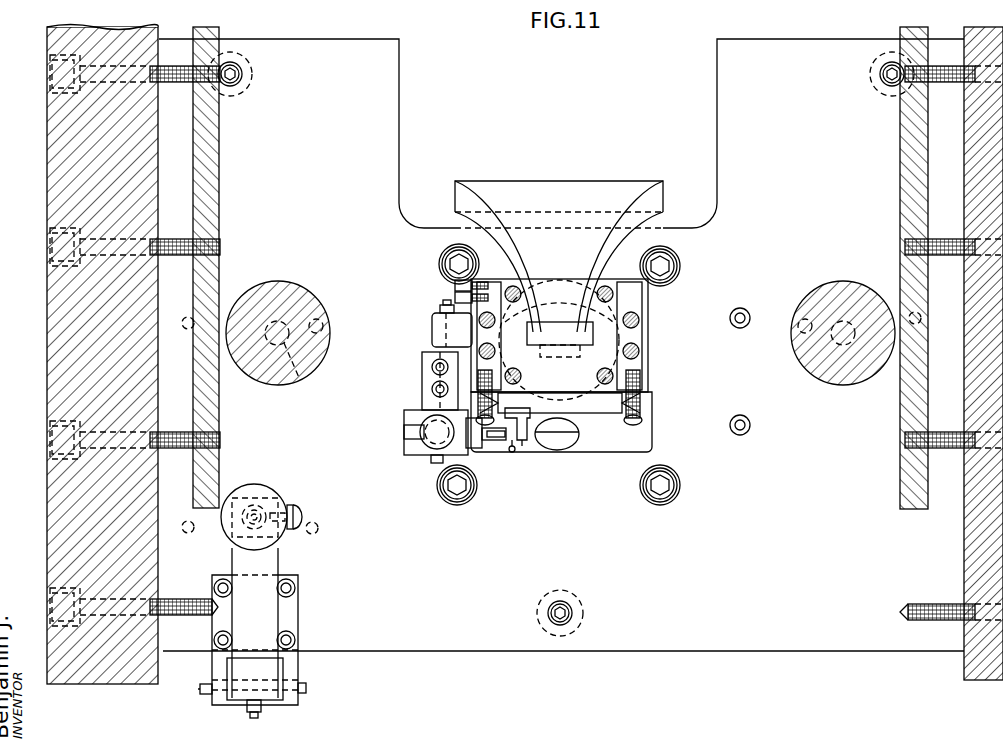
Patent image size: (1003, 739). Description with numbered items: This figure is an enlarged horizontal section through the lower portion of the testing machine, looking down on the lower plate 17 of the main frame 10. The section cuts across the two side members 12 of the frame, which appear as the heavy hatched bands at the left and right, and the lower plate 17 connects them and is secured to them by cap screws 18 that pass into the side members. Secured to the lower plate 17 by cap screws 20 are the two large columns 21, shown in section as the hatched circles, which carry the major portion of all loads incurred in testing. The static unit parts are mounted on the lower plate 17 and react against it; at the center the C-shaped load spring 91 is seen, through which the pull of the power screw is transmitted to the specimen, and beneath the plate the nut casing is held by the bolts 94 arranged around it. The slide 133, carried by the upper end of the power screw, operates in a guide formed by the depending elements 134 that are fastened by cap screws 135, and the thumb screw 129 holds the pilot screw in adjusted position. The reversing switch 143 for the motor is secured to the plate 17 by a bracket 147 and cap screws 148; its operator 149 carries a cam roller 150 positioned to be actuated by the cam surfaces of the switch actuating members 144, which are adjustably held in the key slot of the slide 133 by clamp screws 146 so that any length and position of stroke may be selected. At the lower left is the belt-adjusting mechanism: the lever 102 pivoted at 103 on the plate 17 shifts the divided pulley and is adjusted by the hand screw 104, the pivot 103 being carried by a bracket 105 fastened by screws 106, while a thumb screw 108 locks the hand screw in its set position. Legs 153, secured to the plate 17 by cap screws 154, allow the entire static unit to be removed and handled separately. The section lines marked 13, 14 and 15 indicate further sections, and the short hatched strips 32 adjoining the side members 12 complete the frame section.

The main frame 10 is at (46, 340).
The side members 12 is at (47, 386).
The section line 13 is at (700, 349).
The section line 14 is at (392, 470).
The top plate 15 is at (633, 240).
The lower plate 17 is at (416, 651).
The cap screws 18 is at (178, 620).
The cap screws 20 is at (300, 382).
The columns 21 is at (258, 384).
The guide strip 32 is at (200, 512).
The load spring 91 is at (458, 188).
The bolts 94 is at (448, 265).
The lever 102 is at (288, 564).
The pivot 103 is at (205, 694).
The hand screw 104 is at (272, 492).
The bracket 105 is at (296, 620).
The screws 106 is at (295, 642).
The thumb screw 108 is at (301, 510).
The thumb screw 129 is at (566, 450).
The slide 133 is at (605, 406).
The depending elements 134 is at (645, 406).
The cap screws 135 is at (630, 424).
The reversing switch 143 is at (420, 455).
The switch actuating members 144 is at (528, 440).
The clamp screws 146 is at (508, 440).
The bracket 147 is at (424, 398).
The cap screws 148 is at (432, 372).
The operator 149 is at (505, 440).
The cam roller 150 is at (512, 446).
The legs 153 is at (252, 72).
The cap screws 154 is at (234, 86).